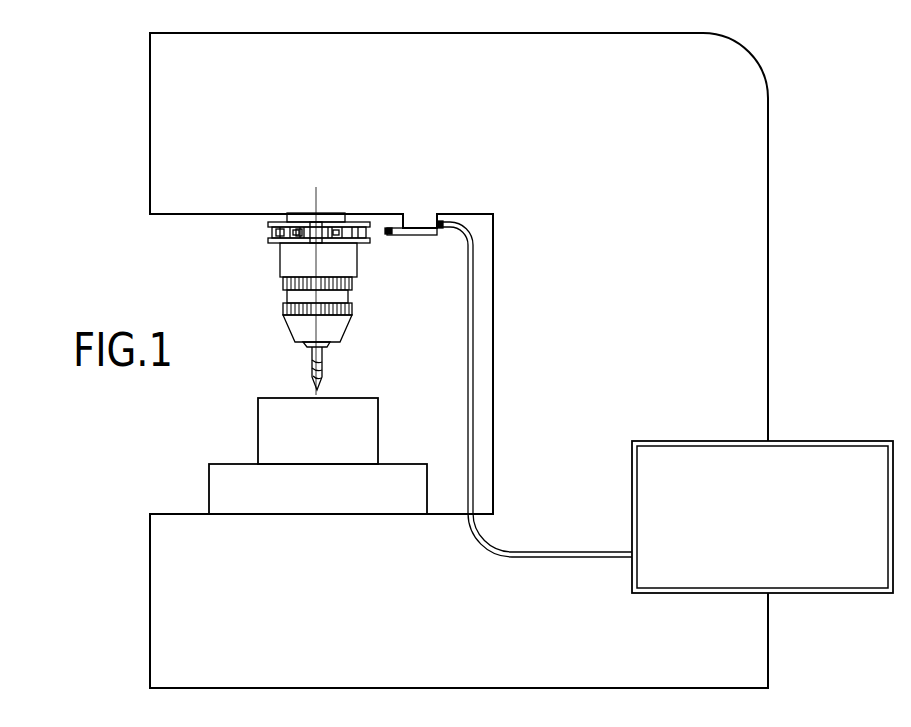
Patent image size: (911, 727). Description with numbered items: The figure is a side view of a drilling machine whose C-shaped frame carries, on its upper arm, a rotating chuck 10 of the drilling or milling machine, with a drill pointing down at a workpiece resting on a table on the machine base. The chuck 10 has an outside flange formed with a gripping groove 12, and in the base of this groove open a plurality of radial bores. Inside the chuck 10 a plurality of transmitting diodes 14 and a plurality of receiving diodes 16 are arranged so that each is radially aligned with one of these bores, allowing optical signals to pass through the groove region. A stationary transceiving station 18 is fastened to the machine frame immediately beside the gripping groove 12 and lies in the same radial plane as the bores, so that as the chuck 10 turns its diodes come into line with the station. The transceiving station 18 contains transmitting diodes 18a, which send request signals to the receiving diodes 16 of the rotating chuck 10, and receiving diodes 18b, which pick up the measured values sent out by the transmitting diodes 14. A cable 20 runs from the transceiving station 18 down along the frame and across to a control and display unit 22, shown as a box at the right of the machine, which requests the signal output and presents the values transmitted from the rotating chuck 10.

The chuck 10 is at (294, 291).
The gripping groove 12 is at (268, 224).
The transmitting diodes 14 is at (278, 243).
The receiving diodes 16 is at (298, 249).
The transceiving station 18 is at (408, 262).
The transmitting diodes 18a is at (388, 236).
The receiving diodes 18b is at (385, 288).
The cable 20 is at (503, 558).
The control and display unit 22 is at (810, 454).